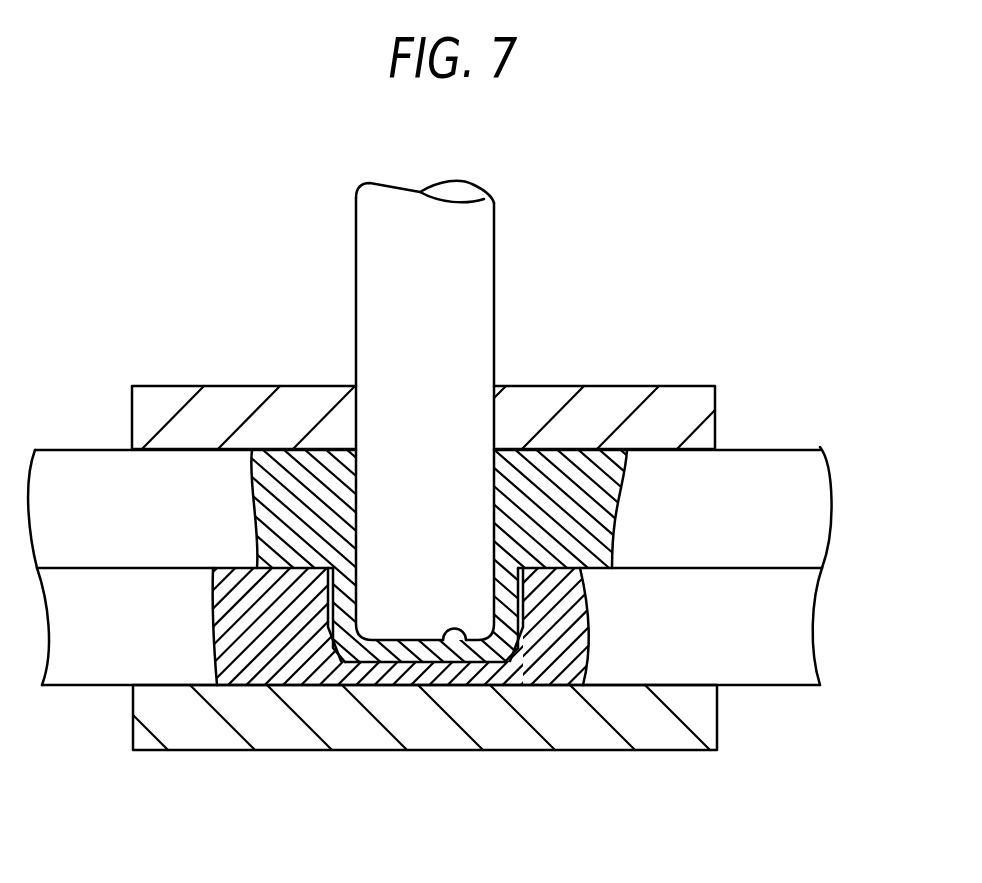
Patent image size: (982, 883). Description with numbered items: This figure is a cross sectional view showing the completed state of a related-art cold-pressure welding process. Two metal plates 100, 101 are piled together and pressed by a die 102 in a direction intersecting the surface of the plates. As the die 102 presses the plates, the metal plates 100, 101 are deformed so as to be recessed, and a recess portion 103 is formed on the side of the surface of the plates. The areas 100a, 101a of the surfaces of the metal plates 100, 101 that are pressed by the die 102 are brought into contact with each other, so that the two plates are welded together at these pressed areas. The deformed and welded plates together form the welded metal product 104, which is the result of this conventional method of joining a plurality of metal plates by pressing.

The metal plate 100 is at (753, 493).
The pressed area of metal plate 100a is at (408, 650).
The metal plate 101 is at (765, 653).
The pressed area of metal plate 101a is at (426, 678).
The die 102 is at (463, 232).
The recess portion 103 is at (458, 638).
The welded metal product 104 is at (828, 405).